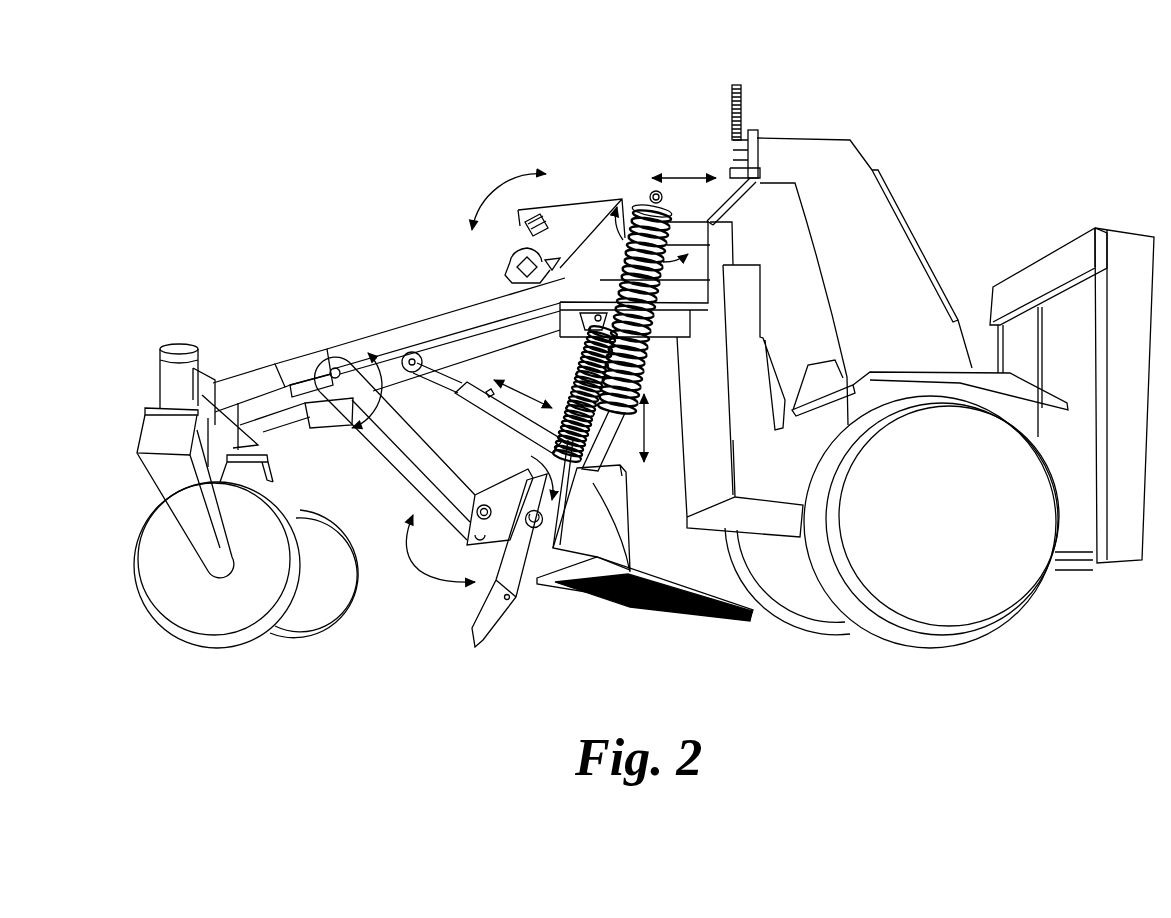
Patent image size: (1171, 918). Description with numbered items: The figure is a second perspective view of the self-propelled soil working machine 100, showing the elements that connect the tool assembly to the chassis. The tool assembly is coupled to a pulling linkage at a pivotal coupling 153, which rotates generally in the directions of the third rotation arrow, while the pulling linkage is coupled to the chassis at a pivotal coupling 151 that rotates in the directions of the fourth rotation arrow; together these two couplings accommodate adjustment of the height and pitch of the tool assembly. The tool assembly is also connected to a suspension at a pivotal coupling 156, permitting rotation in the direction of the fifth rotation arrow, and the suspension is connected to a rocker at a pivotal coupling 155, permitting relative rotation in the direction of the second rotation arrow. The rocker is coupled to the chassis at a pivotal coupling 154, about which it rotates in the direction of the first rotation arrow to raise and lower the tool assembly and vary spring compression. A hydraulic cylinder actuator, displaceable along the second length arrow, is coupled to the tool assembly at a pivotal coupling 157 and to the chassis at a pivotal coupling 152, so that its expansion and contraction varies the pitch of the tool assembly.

The machine 100 is at (266, 142).
The pivotal coupling 151 is at (333, 366).
The pivotal coupling 152 is at (410, 352).
The pivotal coupling 153 is at (486, 505).
The pivotal coupling 154 is at (513, 252).
The pivotal coupling 155 is at (651, 192).
The pivotal coupling 156 is at (621, 613).
The pivotal coupling 157 is at (623, 477).